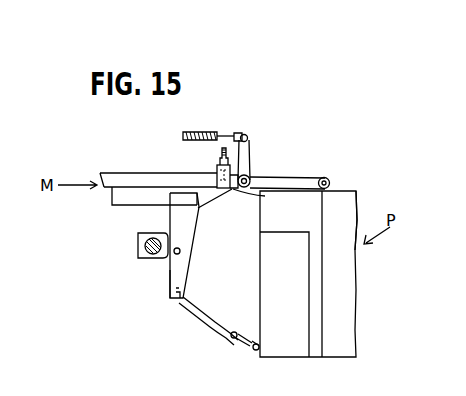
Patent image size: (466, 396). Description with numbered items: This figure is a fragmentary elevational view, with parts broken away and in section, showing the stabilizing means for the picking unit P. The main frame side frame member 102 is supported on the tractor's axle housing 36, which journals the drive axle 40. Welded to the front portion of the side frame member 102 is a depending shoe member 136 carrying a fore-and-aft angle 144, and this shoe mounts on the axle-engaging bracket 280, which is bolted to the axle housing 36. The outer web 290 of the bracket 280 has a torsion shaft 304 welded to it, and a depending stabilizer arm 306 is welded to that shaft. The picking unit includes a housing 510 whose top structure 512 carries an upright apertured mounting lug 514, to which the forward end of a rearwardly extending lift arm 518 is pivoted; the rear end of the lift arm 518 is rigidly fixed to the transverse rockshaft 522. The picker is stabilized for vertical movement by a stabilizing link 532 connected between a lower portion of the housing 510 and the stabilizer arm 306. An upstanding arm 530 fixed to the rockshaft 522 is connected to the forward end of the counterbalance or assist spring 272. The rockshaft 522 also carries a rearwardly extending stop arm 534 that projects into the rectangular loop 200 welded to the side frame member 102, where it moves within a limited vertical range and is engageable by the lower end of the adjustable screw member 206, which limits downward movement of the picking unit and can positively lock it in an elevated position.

The side frame member 102 is at (112, 178).
The shoe member 136 is at (112, 196).
The angle 144 is at (170, 197).
The axle-engaging bracket 280 is at (162, 221).
The outer web 290 is at (190, 229).
The stabilizer arm 306 is at (175, 279).
The torsion shaft 304 is at (181, 252).
The axle housing 36 is at (140, 238).
The drive axle 40 is at (148, 254).
The stabilizing link 532 is at (201, 323).
The rectangular loop 200 is at (217, 171).
The screw member 206 is at (221, 152).
The counterbalance or assist spring 272 is at (192, 123).
The upstanding arm 530 is at (246, 152).
The rockshaft 522 is at (249, 179).
The stop arm 534 is at (262, 204).
The lift arm 518 is at (305, 182).
The mounting lug 514 is at (332, 188).
The housing 510 is at (343, 340).
The top structure 512 is at (345, 212).